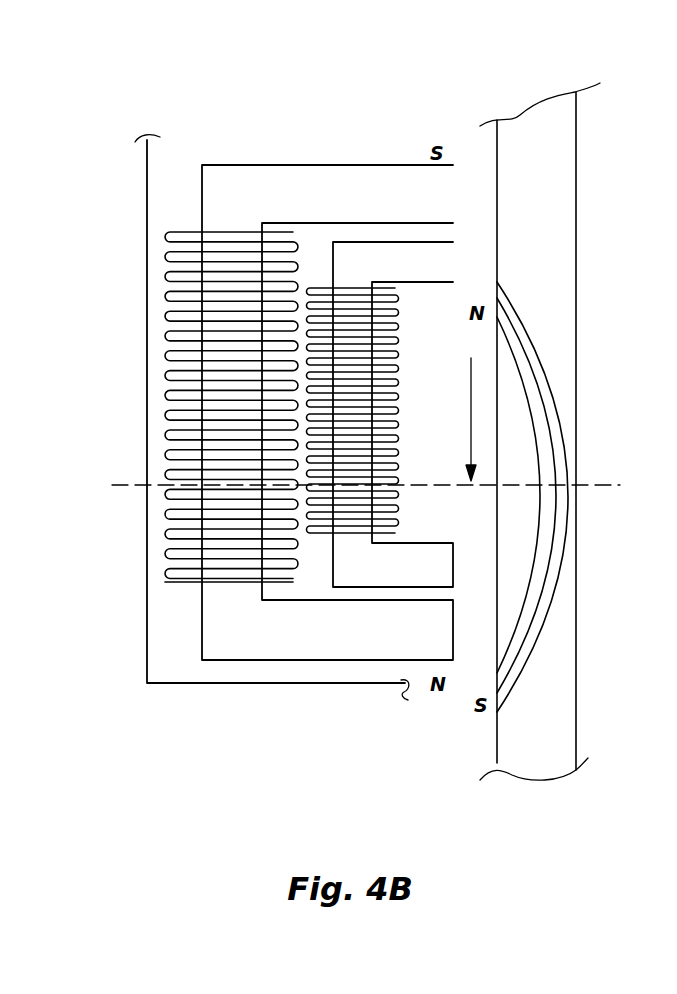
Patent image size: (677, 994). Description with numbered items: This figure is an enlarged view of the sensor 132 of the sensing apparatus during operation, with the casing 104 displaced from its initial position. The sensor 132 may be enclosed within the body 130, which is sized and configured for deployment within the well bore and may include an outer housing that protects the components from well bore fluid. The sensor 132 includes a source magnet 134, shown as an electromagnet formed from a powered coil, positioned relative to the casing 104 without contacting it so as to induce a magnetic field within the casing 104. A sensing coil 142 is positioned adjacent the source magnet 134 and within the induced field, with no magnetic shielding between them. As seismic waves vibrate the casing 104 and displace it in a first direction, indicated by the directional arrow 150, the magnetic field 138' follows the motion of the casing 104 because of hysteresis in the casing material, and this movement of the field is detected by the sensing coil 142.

The sensor 132 is at (97, 140).
The body 130 is at (208, 683).
The source magnet 134 is at (243, 165).
The sensing coil 142 is at (453, 261).
The casing 104 is at (576, 675).
The magnetic field 138' is at (582, 489).
The directional arrow 150 is at (471, 406).